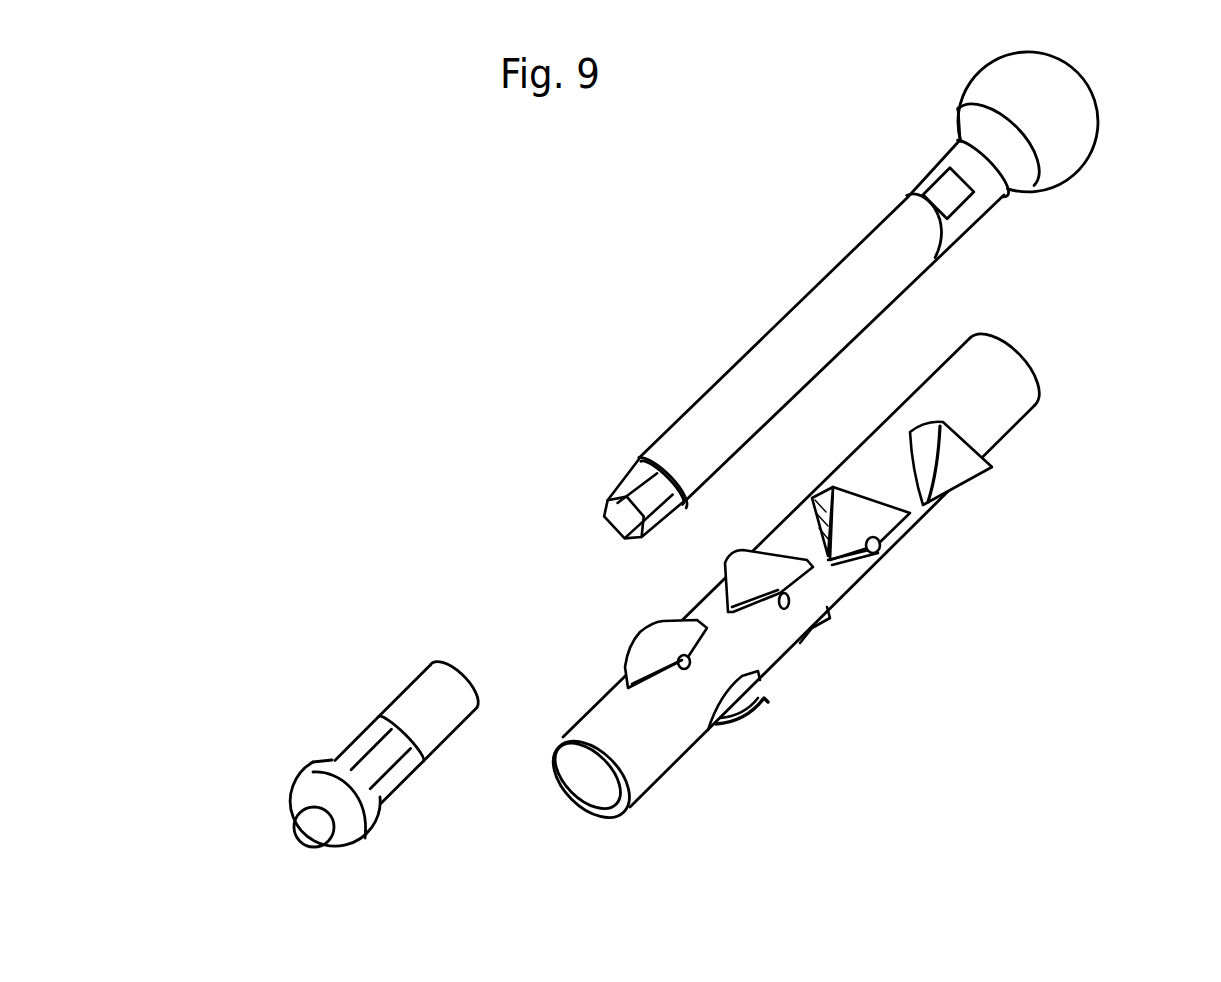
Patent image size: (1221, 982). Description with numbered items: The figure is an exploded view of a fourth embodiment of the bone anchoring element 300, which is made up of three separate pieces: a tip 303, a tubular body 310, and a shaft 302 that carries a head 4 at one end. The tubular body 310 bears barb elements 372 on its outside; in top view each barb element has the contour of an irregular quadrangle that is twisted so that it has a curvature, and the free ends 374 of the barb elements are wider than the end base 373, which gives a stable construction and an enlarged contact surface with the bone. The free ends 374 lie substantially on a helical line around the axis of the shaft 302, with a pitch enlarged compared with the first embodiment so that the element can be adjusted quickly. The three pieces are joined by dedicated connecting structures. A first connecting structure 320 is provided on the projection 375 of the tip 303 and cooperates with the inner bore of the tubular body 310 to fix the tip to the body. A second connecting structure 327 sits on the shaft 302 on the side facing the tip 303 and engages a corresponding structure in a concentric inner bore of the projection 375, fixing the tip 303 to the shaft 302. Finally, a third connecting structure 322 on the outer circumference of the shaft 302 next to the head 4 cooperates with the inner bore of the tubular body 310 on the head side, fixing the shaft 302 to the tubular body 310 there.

The bone anchoring element 300 is at (704, 476).
The shaft 302 is at (758, 342).
The head 4 is at (1040, 138).
The third connecting structure 322 is at (978, 232).
The hexagonal drive tip 327 is at (618, 482).
The tubular body 310 is at (642, 777).
The barb 374 is at (927, 515).
The barb 372 is at (860, 523).
The barb base tab 373 is at (866, 562).
The tip 303 is at (309, 763).
The first connecting structure 320 is at (352, 728).
The cylindrical portion of plug 375 is at (427, 735).